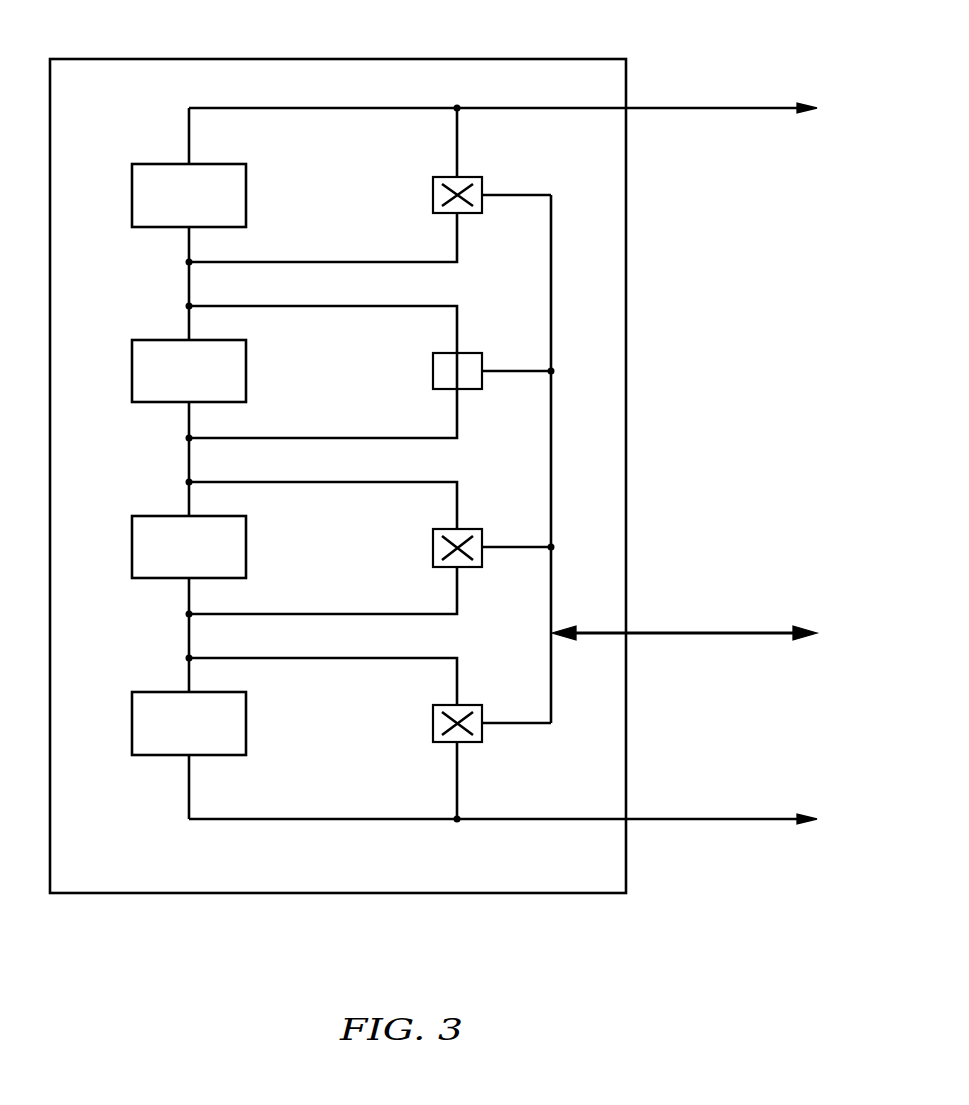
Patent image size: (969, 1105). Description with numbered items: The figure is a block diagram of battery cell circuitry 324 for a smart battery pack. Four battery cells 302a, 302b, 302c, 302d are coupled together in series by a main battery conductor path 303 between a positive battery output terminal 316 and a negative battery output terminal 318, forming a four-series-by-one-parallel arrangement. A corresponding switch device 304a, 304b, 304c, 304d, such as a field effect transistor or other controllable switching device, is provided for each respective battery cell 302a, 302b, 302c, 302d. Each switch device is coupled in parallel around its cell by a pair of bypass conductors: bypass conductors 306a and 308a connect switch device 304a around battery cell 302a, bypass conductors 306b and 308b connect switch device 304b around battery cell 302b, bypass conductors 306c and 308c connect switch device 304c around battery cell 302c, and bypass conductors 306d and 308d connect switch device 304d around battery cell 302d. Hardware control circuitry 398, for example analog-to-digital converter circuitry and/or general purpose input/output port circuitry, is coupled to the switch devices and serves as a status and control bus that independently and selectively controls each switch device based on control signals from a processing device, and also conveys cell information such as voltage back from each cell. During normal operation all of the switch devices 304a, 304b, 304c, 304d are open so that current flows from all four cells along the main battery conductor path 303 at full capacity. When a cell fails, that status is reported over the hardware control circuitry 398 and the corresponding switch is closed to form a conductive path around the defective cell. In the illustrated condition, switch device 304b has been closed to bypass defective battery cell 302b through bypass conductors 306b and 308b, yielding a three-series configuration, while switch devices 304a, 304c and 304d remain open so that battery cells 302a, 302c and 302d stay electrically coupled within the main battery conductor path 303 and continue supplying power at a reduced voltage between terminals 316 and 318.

The battery cell circuitry 324 is at (176, 58).
The main battery conductor path 303 is at (343, 108).
The battery cell 302a is at (131, 196).
The battery cell 302b is at (131, 372).
The battery cell 302c is at (131, 548).
The battery cell 302d is at (131, 723).
The switch device 304a is at (432, 194).
The switch device 304b is at (432, 370).
The switch device 304c is at (432, 550).
The switch device 304d is at (432, 726).
The bypass conductor 306a is at (459, 138).
The bypass conductor 306b is at (274, 307).
The bypass conductor 306c is at (274, 483).
The bypass conductor 306d is at (274, 659).
The bypass conductor 308a is at (418, 263).
The bypass conductor 308b is at (390, 439).
The bypass conductor 308c is at (390, 615).
The bypass conductor 308d is at (459, 784).
The battery output terminal 316 is at (728, 110).
The battery output terminal 318 is at (735, 817).
The hardware control circuitry 398 is at (694, 635).